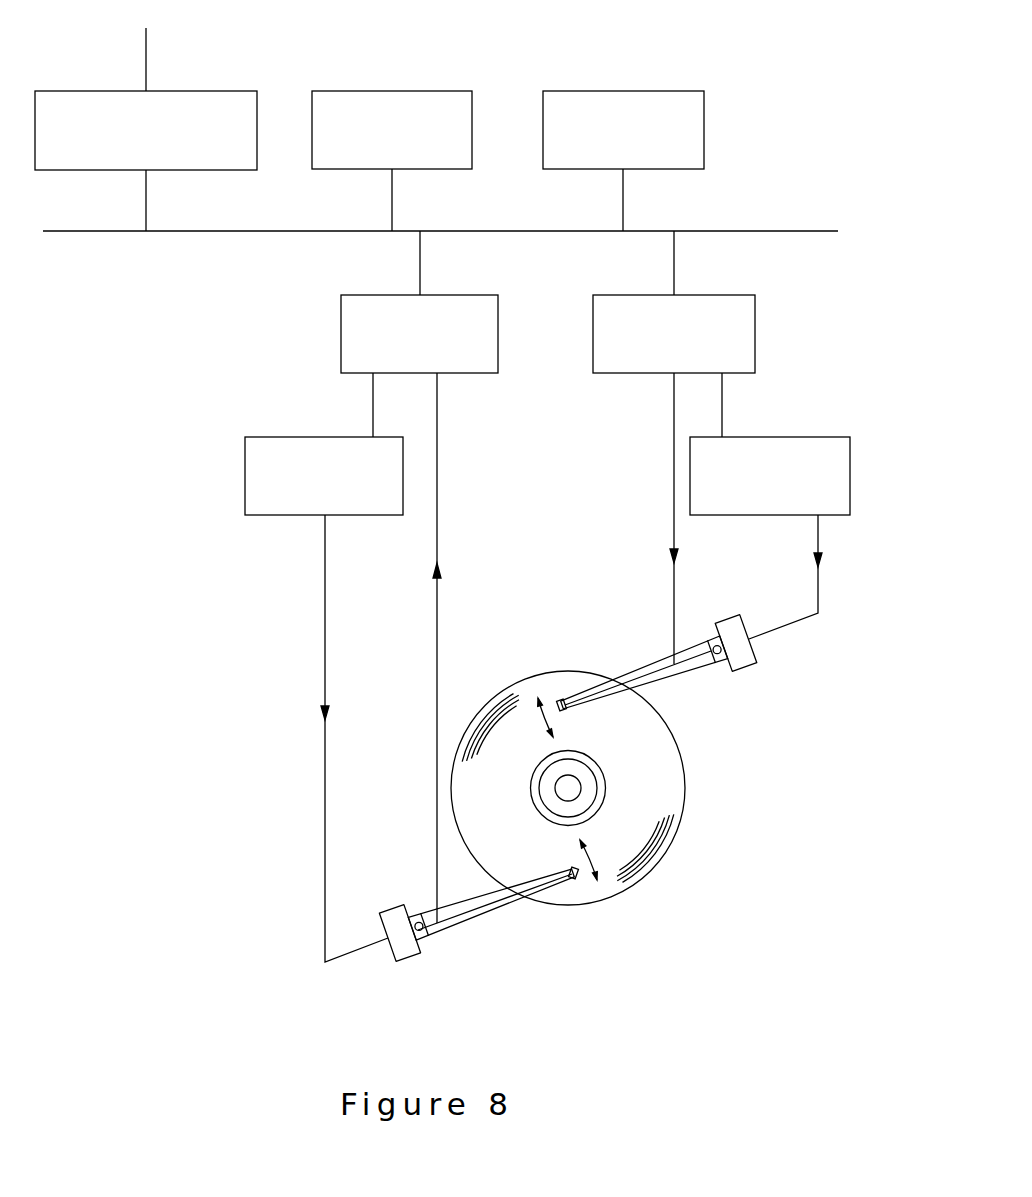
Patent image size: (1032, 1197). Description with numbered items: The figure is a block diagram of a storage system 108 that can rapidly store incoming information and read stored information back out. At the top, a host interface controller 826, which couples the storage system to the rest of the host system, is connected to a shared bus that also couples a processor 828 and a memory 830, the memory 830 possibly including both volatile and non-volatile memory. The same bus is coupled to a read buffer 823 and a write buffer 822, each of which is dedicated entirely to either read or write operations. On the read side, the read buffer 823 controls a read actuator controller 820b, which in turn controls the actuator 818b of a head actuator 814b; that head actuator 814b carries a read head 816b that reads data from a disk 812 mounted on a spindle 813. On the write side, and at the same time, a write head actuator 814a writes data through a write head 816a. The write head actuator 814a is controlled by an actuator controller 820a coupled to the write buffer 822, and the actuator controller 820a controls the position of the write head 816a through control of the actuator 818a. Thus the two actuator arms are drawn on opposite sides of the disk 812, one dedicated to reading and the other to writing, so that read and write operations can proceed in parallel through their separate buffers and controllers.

The storage system 108 is at (440, 494).
The disk 812 is at (625, 788).
The spindle 813 is at (659, 787).
The write head actuator 814a is at (637, 658).
The head actuator 814b is at (491, 930).
The write head 816a is at (509, 678).
The read head 816b is at (627, 905).
The actuator 818a is at (781, 671).
The actuator 818b is at (448, 966).
The actuator controller 820a is at (793, 510).
The read actuator controller 820b is at (272, 699).
The write buffer 822 is at (717, 447).
The read buffer 823 is at (375, 577).
The host interface controller 826 is at (186, 129).
The processor 828 is at (417, 133).
The memory 830 is at (649, 133).